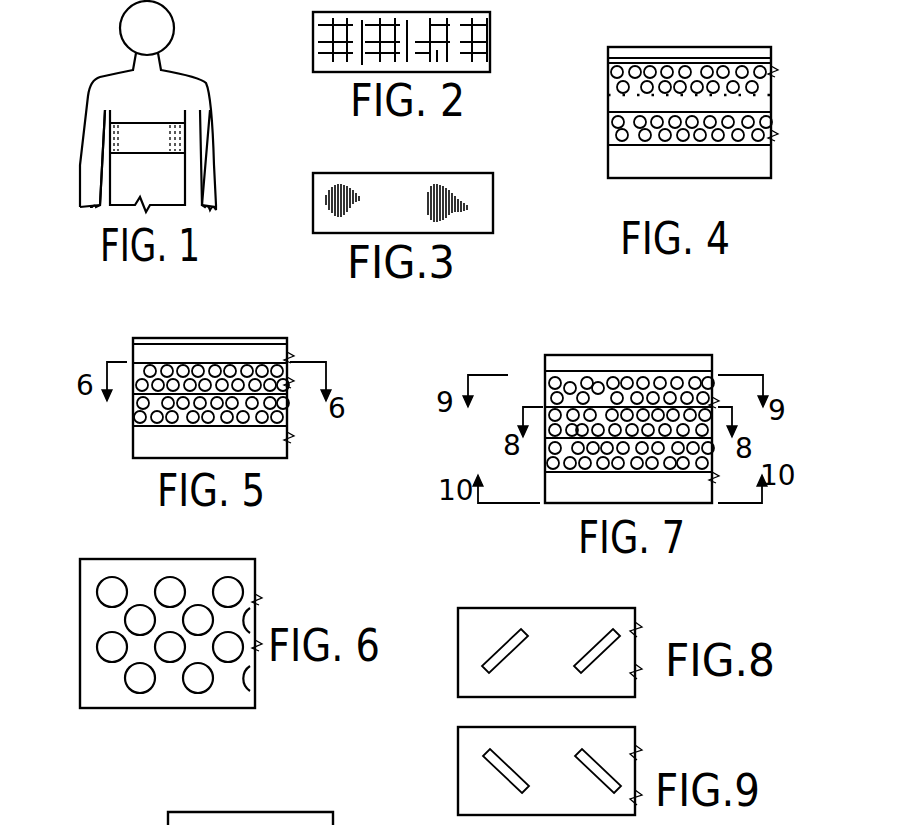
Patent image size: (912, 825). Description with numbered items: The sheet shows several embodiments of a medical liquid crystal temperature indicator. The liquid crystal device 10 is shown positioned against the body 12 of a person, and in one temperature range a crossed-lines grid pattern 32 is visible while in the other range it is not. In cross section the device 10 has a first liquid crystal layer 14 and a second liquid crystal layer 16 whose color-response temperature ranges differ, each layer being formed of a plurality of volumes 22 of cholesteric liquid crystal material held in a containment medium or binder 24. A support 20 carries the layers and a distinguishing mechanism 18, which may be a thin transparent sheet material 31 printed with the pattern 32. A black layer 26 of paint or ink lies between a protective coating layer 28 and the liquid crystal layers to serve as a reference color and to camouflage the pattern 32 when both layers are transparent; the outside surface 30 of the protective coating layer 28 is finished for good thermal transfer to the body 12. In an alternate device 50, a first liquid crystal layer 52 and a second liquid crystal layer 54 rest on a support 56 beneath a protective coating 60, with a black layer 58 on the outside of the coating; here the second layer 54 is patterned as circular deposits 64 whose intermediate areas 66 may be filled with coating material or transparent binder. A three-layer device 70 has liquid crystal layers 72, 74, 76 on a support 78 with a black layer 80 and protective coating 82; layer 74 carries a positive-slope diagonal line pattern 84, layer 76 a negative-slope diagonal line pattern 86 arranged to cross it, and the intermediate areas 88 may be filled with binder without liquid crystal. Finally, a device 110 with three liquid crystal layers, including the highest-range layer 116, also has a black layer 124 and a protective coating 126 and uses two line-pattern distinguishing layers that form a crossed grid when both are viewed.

In FIG. 1, the liquid crystal device 10 is at (182, 135).
In FIG. 2, the liquid crystal device 10 is at (313, 45).
In FIG. 3, the liquid crystal device 10 is at (313, 213).
In FIG. 4, the liquid crystal device 10 is at (585, 66).
In FIG. 1, the body 12 is at (165, 178).
In FIG. 4, the first liquid crystal layer 14 is at (608, 132).
In FIG. 4, the second liquid crystal layer 16 is at (608, 79).
In FIG. 4, the distinguishing mechanism 18 is at (608, 111).
In FIG. 4, the support 20 is at (608, 177).
In FIG. 4, the volumes of liquid crystal material 22 is at (617, 66).
In FIG. 4, the containment medium or binder 24 is at (630, 66).
In FIG. 4, the black layer 26 is at (772, 58).
In FIG. 4, the protective coating layer 28 is at (750, 52).
In FIG. 4, the outside surface 30 is at (735, 45).
In FIG. 4, the transparent sheet material 31 is at (608, 99).
In FIG. 2, the pattern or indicium 32 is at (347, 22).
In FIG. 4, the pattern or indicium 32 is at (735, 96).
In FIG. 5, the device 50 is at (118, 346).
In FIG. 5, the first liquid crystal layer 52 is at (135, 412).
In FIG. 5, the second liquid crystal layer 54 is at (135, 373).
In FIG. 6, the second liquid crystal layer 54 is at (270, 610).
In FIG. 5, the support 56 is at (148, 448).
In FIG. 5, the black layer 58 is at (227, 340).
In FIG. 6, the black layer 58 is at (232, 695).
In FIG. 5, the protective coating 60 is at (150, 350).
In FIG. 6, the circular deposits 64 is at (232, 590).
In FIG. 6, the intermediate areas 66 is at (205, 578).
In FIG. 7, the device 70 is at (568, 340).
In FIG. 7, the first liquid crystal layer 72 is at (545, 462).
In FIG. 7, the second liquid crystal layer 74 is at (545, 428).
In FIG. 8, the second liquid crystal layer 74 is at (645, 652).
In FIG. 7, the third liquid crystal layer 76 is at (545, 383).
In FIG. 9, the third liquid crystal layer 76 is at (648, 765).
In FIG. 7, the support 78 is at (553, 493).
In FIG. 7, the black layer 80 is at (712, 371).
In FIG. 7, the protective coating 82 is at (578, 360).
In FIG. 8, the diagonal line pattern 84 is at (612, 645).
In FIG. 9, the diagonal line pattern 86 is at (605, 775).
In FIG. 8, the intermediate areas 88 is at (558, 625).
In FIG. 9, the intermediate areas 88 is at (602, 745).
In FIG. 11, the device 110 is at (186, 794).
In FIG. 11, the third liquid crystal layer 116 is at (141, 818).
In FIG. 11, the black layer 124 is at (364, 824).
In FIG. 11, the protective coating or layer 126 is at (225, 822).